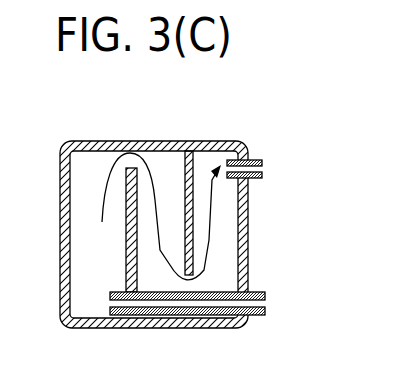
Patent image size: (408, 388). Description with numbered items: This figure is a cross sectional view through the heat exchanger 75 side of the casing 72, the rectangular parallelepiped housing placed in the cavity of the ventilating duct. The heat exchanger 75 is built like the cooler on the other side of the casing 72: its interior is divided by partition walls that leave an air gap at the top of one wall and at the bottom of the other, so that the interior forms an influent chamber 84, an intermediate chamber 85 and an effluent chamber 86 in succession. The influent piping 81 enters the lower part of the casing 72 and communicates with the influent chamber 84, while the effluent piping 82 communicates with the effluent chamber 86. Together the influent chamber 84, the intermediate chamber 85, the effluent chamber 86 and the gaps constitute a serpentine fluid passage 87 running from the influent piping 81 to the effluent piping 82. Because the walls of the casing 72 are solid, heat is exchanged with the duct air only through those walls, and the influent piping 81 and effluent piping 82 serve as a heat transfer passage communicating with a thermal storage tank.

The casing 72 is at (151, 150).
The heat exchanger 75 is at (90, 157).
The influent piping 81 is at (215, 318).
The effluent piping 82 is at (247, 158).
The influent chamber 84 is at (80, 248).
The intermediate chamber 85 is at (147, 255).
The effluent chamber 86 is at (225, 263).
The fluid passage 87 is at (154, 186).